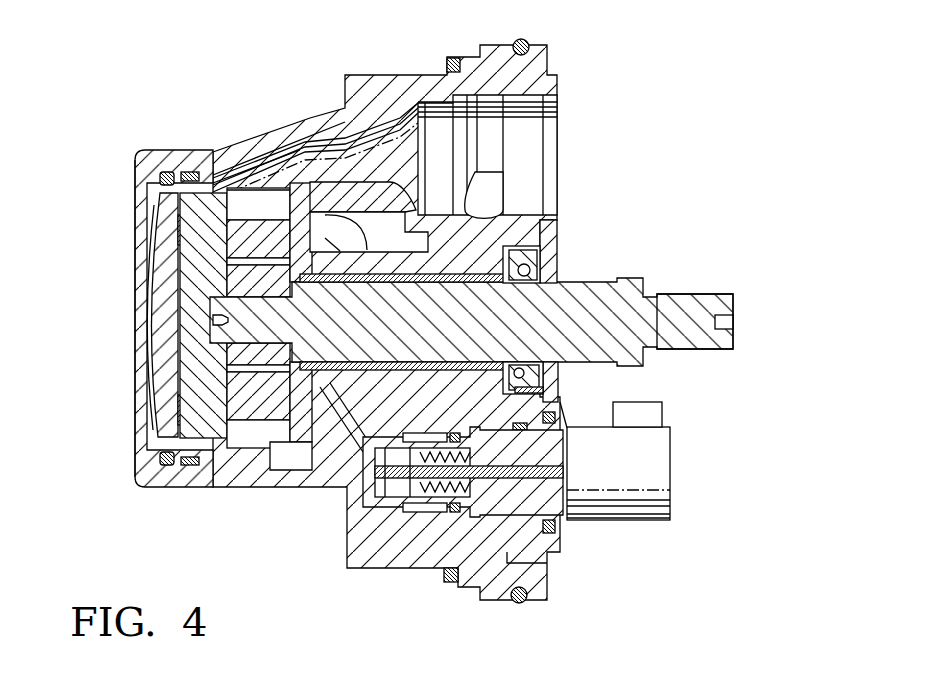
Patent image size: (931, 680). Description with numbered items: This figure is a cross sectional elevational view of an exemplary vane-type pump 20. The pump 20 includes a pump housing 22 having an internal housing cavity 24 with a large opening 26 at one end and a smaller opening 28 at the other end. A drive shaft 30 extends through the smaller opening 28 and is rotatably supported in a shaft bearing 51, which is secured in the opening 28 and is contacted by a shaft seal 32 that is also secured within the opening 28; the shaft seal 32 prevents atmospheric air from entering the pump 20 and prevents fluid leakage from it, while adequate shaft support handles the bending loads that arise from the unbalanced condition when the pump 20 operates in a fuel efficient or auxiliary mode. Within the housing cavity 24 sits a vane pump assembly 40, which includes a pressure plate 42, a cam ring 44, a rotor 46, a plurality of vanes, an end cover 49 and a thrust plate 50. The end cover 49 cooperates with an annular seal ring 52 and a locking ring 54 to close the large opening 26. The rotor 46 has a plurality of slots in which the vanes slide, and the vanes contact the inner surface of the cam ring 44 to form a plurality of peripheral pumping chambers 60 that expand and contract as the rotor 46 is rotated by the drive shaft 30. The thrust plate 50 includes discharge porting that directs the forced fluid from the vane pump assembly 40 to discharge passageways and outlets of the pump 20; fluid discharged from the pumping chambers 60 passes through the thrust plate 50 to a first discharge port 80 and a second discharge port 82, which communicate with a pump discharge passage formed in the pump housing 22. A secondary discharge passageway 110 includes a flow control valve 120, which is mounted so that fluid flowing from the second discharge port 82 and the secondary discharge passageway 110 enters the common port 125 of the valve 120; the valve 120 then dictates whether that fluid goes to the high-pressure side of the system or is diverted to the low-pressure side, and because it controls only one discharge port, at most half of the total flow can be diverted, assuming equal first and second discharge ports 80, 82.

The pump 20 is at (633, 47).
The pump housing 22 is at (212, 160).
The internal housing cavity 24 is at (255, 450).
The large opening 26 is at (148, 422).
The smaller opening 28 is at (508, 322).
The drive shaft 30 is at (697, 340).
The shaft seal 32 is at (552, 232).
The vane pump assembly 40 is at (250, 170).
The pressure plate 42 is at (192, 275).
The cam ring 44 is at (283, 200).
The rotor 46 is at (240, 405).
The end cover 49 is at (165, 305).
The thrust plate 50 is at (303, 200).
The shaft bearing 51 is at (556, 270).
The annular seal ring 52 is at (190, 466).
The locking ring 54 is at (165, 466).
The peripheral pumping chambers 60 is at (250, 268).
The first discharge port 80 is at (353, 220).
The second discharge port 82 is at (288, 470).
The secondary discharge passageway 110 is at (323, 447).
The flow control valve 120 is at (687, 462).
The common port 125 is at (370, 490).